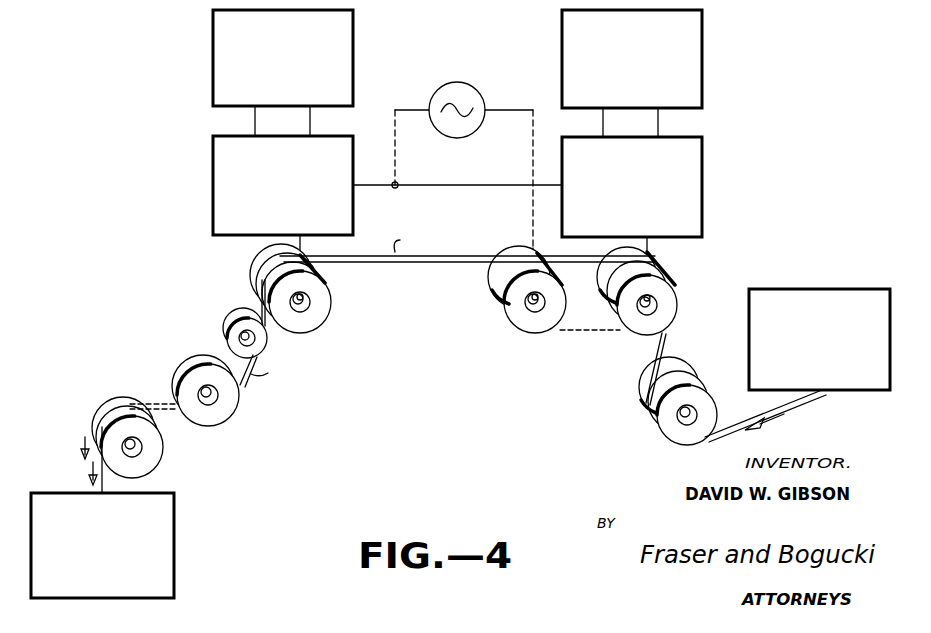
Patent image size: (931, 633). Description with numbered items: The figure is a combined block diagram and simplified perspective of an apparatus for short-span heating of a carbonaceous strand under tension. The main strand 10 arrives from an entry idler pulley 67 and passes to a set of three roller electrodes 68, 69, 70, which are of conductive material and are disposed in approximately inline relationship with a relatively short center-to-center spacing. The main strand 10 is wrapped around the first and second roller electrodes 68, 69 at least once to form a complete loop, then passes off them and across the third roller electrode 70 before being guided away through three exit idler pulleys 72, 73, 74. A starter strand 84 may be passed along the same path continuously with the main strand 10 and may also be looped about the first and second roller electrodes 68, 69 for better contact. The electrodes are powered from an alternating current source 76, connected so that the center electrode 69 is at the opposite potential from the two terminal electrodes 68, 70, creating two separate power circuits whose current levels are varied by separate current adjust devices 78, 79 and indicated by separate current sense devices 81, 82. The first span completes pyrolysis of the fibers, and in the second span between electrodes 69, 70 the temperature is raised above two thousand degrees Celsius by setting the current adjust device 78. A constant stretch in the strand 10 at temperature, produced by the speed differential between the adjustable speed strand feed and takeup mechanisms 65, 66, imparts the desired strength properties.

The main strand 10 is at (438, 268).
The adjustable speed strand feed mechanism 65 is at (749, 306).
The adjustable speed strand takeup mechanism 66 is at (175, 510).
The entry idler pulley 67 is at (657, 428).
The first roller electrode 68 is at (632, 325).
The center roller electrode 69 is at (504, 304).
The third roller electrode 70 is at (332, 303).
The exit idler pulley 72 is at (242, 316).
The exit idler pulley 73 is at (222, 413).
The exit idler pulley 74 is at (163, 450).
The alternating current source 76 is at (459, 82).
The current adjust device 78 is at (354, 152).
The current adjust device 79 is at (703, 154).
The current sense device 81 is at (354, 28).
The current sense device 82 is at (703, 30).
The starter strand 84 is at (363, 240).